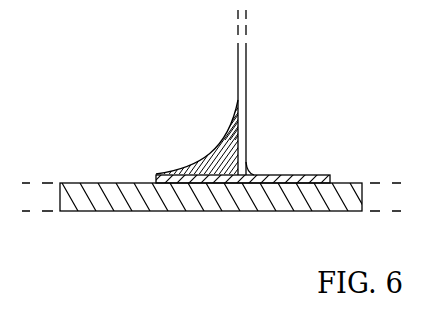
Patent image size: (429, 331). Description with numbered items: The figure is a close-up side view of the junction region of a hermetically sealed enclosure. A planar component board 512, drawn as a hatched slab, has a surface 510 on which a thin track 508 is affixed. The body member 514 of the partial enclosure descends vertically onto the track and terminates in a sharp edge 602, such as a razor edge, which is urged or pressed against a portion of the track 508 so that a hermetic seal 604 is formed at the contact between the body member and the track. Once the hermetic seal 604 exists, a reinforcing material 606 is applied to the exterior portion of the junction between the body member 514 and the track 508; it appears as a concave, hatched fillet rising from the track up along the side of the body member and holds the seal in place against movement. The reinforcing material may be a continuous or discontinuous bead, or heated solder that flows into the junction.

The track 508 is at (318, 176).
The surface 510 is at (84, 169).
The component board 512 is at (109, 212).
The body member 514 is at (223, 92).
The sharp edge 602 is at (247, 173).
The hermetic seal 604 is at (276, 145).
The reinforcing material 606 is at (205, 150).